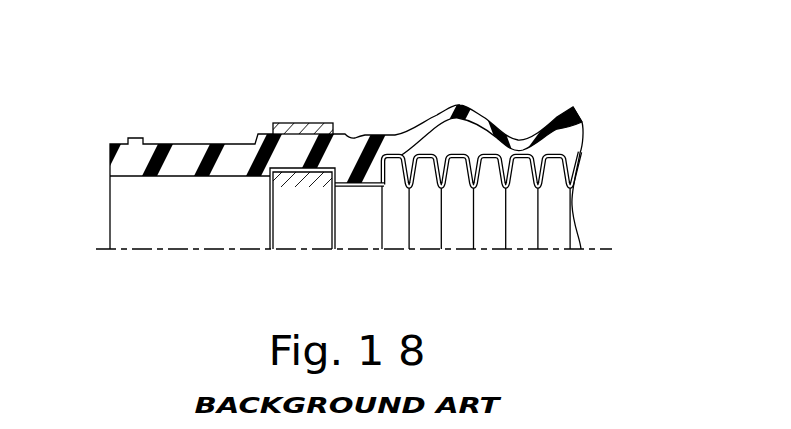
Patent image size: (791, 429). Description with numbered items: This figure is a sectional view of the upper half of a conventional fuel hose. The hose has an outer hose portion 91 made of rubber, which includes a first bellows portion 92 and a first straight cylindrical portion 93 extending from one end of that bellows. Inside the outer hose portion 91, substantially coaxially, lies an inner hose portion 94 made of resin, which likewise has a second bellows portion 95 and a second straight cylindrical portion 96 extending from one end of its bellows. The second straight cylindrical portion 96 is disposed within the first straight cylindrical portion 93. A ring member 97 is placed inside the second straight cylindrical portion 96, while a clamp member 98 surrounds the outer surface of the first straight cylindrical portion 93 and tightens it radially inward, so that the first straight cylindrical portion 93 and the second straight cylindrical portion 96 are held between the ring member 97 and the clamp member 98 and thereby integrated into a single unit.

The outer hose portion 91 is at (371, 131).
The first bellows portion 92 is at (484, 120).
The first straight cylindrical portion 93 is at (257, 132).
The inner hose portion 94 is at (428, 146).
The second bellows portion 95 is at (566, 162).
The second straight cylindrical portion 96 is at (353, 187).
The ring member 97 is at (284, 178).
The clamp member 98 is at (288, 123).